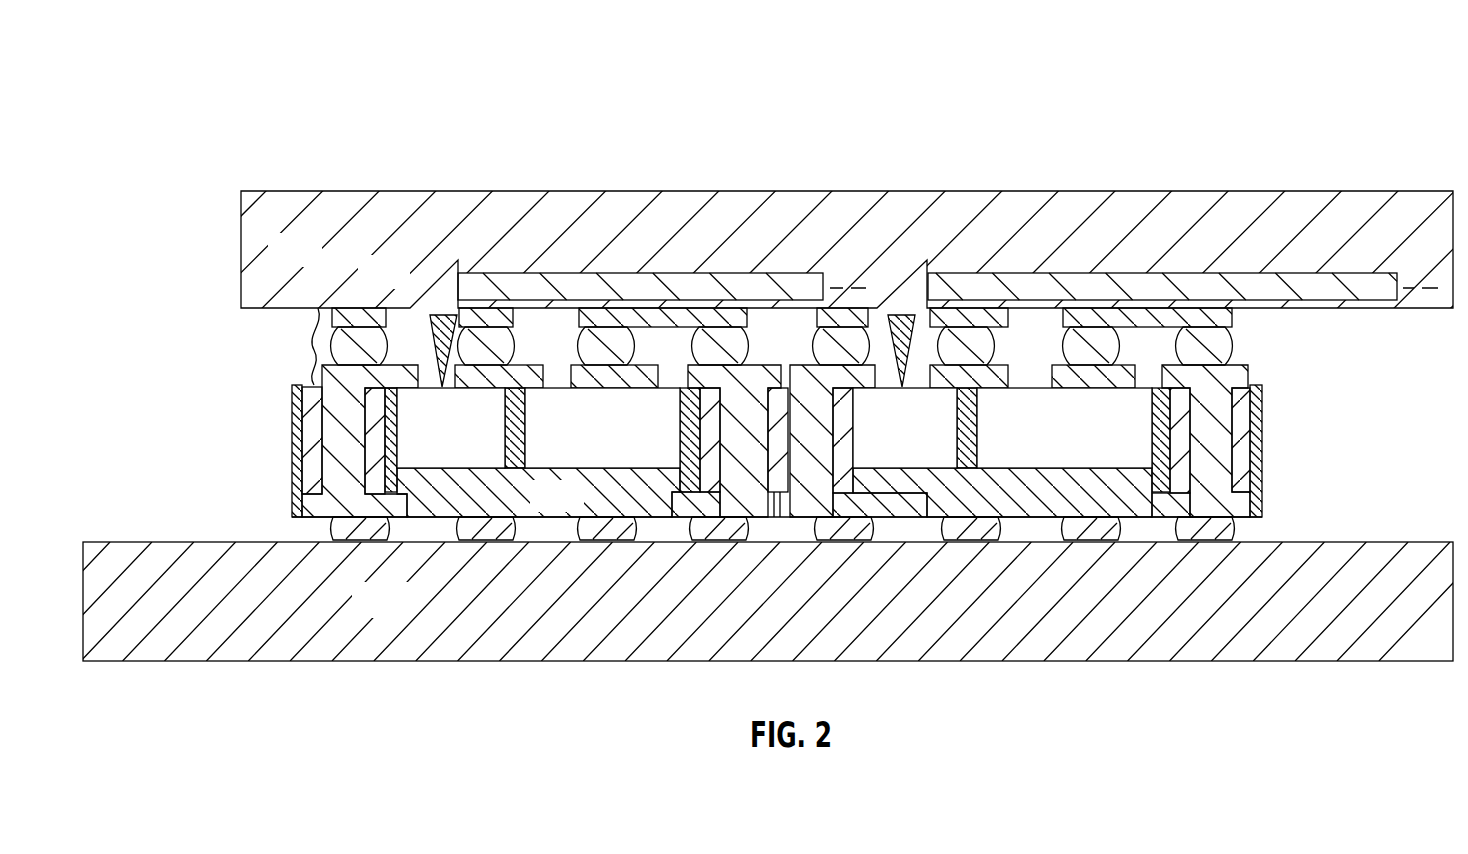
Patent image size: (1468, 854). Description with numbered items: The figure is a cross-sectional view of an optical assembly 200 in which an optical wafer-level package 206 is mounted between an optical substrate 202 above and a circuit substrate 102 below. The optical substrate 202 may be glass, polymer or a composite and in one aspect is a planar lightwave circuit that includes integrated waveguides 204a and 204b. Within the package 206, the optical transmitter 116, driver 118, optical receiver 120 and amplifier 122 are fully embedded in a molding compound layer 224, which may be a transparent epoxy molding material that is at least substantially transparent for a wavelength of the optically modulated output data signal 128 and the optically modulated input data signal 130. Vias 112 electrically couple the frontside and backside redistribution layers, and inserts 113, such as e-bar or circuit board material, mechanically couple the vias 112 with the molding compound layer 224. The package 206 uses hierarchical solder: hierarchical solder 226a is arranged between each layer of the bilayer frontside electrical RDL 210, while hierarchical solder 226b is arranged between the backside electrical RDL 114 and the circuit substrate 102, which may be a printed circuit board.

The optical assembly 200 is at (177, 89).
The optical substrate 202 is at (318, 264).
The integrated waveguide 204a is at (781, 270).
The integrated waveguide 204b is at (1370, 283).
The optically modulated output data signal 128 is at (434, 337).
The optically modulated input data signal 130 is at (902, 315).
The bilayer frontside electrical RDL 210 is at (305, 343).
The hierarchical solder 226a is at (1218, 350).
The hierarchical solder 226b is at (1208, 528).
The optical wafer-level package 206 is at (787, 439).
The vias 112 is at (1215, 412).
The inserts 113 is at (307, 388).
The backside electrical RDL 114 is at (297, 508).
The molding compound layer 224 is at (578, 509).
The optical transmitter 116 is at (470, 441).
The driver 118 is at (637, 441).
The optical receiver 120 is at (932, 442).
The amplifier 122 is at (1082, 441).
The circuit substrate 102 is at (401, 614).